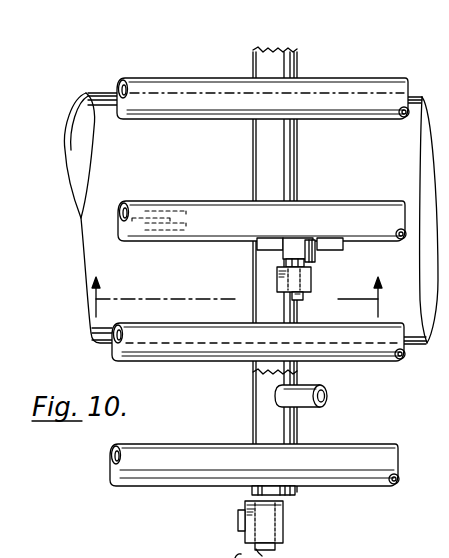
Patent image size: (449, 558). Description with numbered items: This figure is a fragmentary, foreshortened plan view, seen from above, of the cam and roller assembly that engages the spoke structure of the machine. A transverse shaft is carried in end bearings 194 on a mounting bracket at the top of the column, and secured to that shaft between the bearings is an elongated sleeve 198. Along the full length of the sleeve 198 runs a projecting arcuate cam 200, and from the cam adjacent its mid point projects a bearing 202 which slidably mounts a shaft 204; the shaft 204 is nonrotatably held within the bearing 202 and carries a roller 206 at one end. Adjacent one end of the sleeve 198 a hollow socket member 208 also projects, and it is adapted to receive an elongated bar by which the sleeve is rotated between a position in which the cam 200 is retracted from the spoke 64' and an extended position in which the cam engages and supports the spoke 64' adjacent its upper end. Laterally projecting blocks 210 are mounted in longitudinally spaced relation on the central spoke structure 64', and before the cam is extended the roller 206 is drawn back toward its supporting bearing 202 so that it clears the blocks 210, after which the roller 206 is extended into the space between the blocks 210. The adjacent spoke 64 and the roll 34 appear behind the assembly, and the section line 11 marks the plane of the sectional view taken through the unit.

The roll / cylinder 34 is at (77, 163).
The tube 64 is at (260, 238).
The central spoke structure 64' is at (259, 354).
The elongated sleeve 198 is at (252, 147).
The projecting arcuate cam 200 is at (267, 179).
The laterally projecting blocks 210 is at (330, 238).
The roller 206 is at (314, 254).
The bearing 202 is at (311, 281).
The shaft 204 is at (298, 300).
The hollow socket member 208 is at (327, 400).
The end bearings 194 is at (283, 520).
The section line 11- 11 is at (232, 297).